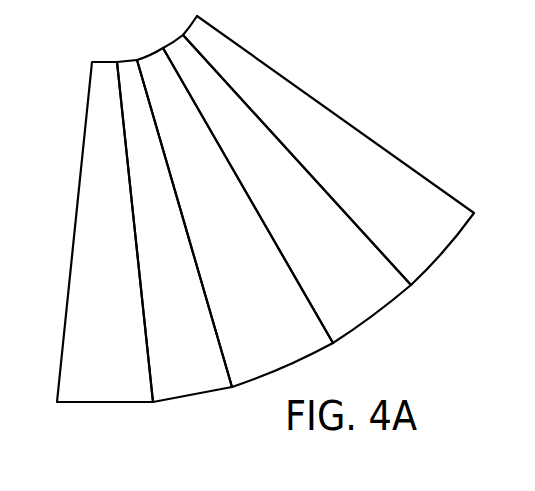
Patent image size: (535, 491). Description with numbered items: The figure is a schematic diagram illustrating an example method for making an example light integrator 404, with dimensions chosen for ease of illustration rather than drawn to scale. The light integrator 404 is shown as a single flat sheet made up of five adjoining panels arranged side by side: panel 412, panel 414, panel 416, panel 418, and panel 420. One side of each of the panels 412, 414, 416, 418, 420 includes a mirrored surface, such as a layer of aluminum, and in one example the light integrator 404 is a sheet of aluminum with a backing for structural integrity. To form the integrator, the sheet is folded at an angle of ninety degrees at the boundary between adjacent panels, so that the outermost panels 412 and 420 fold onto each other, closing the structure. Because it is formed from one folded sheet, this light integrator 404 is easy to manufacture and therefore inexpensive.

The light integrator 404 is at (265, 206).
The panel 412 is at (378, 189).
The panel 414 is at (326, 238).
The panel 416 is at (258, 277).
The panel 418 is at (190, 298).
The panel 420 is at (125, 303).